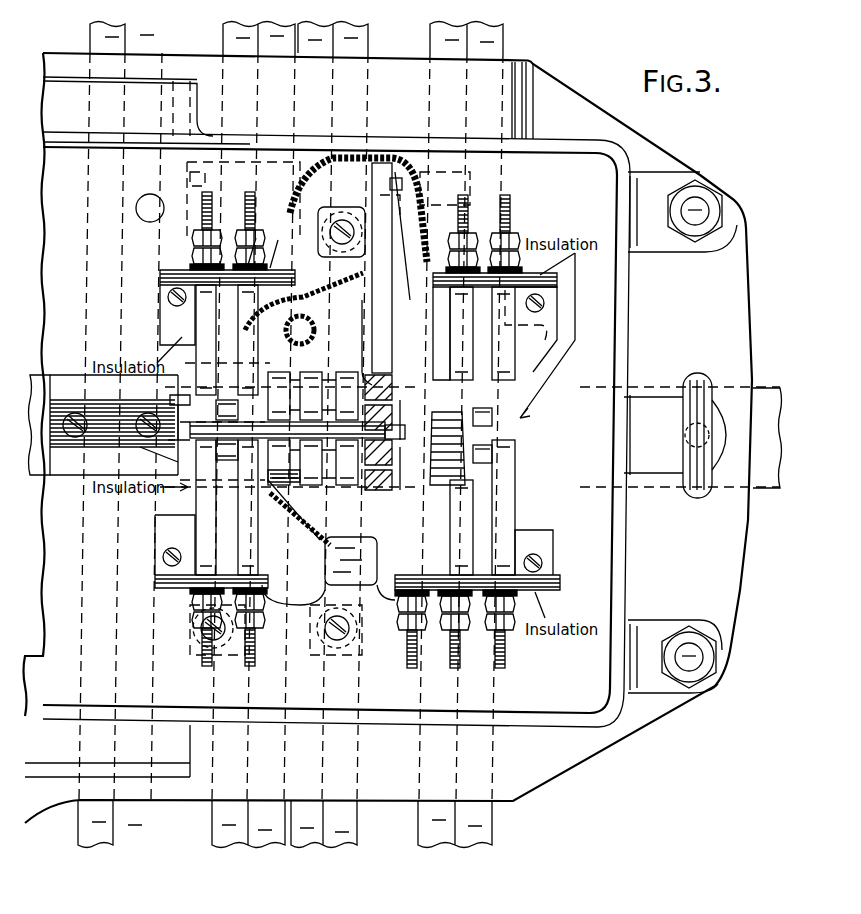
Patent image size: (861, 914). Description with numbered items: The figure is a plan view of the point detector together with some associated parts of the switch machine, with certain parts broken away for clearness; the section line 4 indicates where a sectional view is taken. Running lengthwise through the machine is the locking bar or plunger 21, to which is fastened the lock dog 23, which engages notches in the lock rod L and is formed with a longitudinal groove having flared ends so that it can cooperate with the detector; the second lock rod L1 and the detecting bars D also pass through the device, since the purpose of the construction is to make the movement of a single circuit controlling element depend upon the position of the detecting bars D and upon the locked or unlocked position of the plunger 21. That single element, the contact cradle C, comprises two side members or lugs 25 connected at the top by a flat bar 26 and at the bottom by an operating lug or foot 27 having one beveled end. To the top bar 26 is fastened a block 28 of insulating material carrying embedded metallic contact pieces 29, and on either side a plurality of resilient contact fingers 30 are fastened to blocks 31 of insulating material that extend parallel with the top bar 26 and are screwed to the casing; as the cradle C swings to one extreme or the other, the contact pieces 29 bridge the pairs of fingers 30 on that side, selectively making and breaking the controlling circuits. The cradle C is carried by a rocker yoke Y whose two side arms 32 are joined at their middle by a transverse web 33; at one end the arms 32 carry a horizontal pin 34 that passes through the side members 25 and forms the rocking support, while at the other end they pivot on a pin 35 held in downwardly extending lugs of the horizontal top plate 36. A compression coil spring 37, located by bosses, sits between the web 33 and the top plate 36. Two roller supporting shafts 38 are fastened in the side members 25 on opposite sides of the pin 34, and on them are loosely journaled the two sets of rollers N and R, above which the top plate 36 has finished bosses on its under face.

The locking bar or plunger 21 is at (767, 477).
The lock dog 23 is at (77, 463).
The side members or lugs 25 is at (395, 412).
The flat bar 26 is at (318, 488).
The operating lug or foot 27 is at (167, 400).
The block of insulating material 28 is at (353, 421).
The metallic contact pieces 29 is at (353, 463).
The resilient contact fingers 30 is at (354, 430).
The blocks of insulating material 31 is at (265, 298).
The side arms 32 is at (388, 242).
The transverse web 33 is at (323, 410).
The horizontal pin 34 is at (395, 448).
The pin 35 is at (402, 183).
The horizontal top plate 36 is at (316, 306).
The compression coil spring 37 is at (316, 328).
The roller supporting shafts 38 is at (382, 392).
The lock rod L is at (143, 30).
The lock rod L1 is at (457, 868).
The detecting bars D is at (277, 43).
The section line 4 is at (330, 13).
The rocker yoke Y is at (388, 212).
The set of rollers R is at (322, 385).
The contact cradle C is at (388, 480).
The set of rollers N is at (328, 558).